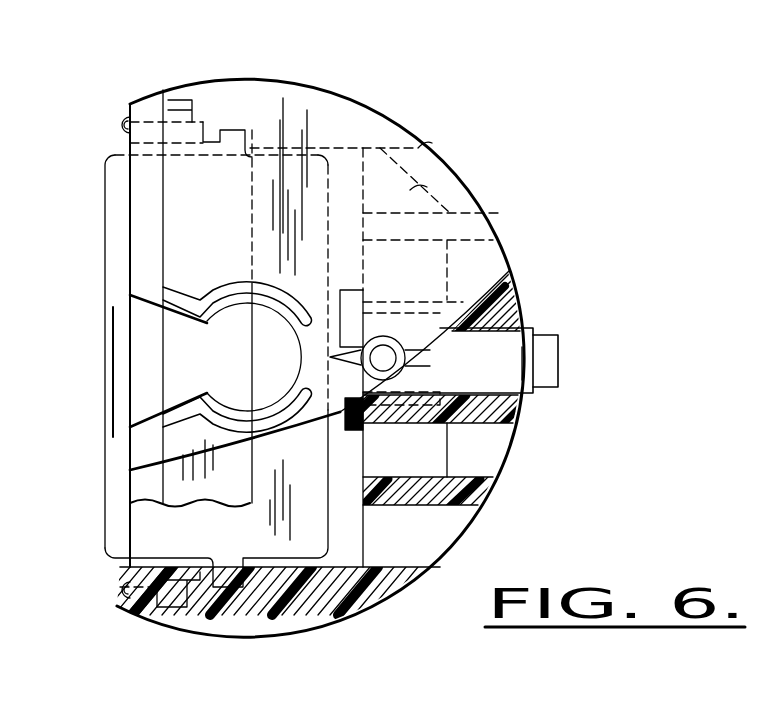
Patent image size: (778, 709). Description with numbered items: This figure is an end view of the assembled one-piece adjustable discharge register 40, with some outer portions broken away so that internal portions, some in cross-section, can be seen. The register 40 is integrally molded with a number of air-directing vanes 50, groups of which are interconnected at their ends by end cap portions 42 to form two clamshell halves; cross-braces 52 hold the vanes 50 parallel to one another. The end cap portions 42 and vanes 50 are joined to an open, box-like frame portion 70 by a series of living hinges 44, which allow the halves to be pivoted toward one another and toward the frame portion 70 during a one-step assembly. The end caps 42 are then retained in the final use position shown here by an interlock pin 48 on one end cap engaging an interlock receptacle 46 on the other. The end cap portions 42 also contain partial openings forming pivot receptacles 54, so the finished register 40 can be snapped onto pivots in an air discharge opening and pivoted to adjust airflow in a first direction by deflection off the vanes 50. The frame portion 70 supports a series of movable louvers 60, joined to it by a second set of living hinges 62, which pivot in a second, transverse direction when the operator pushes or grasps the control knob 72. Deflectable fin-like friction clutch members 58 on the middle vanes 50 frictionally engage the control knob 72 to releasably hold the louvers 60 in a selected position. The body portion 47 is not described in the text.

The one-piece adjustable discharge register 40 is at (400, 118).
The end cap portions 42 is at (137, 448).
The living hinges 44 is at (117, 123).
The interlock receptacle 46 is at (410, 366).
The body portion 47 is at (327, 100).
The interlock pin 48 is at (405, 350).
The air-directing vanes 50 is at (408, 140).
The cross-braces 52 is at (447, 190).
The pivot receptacles 54 is at (218, 312).
The friction clutch members 58 is at (417, 313).
The louvers 60 is at (112, 384).
The living hinges 62 is at (210, 132).
The frame portion 70 is at (153, 345).
The control knob 72 is at (535, 368).